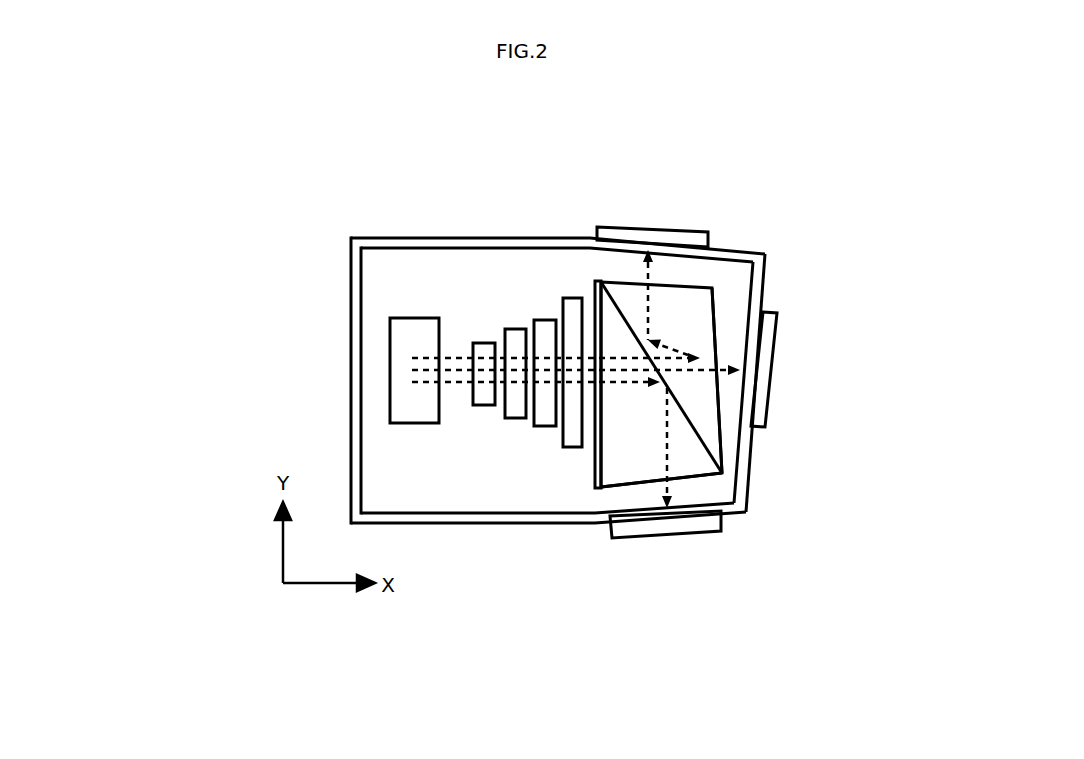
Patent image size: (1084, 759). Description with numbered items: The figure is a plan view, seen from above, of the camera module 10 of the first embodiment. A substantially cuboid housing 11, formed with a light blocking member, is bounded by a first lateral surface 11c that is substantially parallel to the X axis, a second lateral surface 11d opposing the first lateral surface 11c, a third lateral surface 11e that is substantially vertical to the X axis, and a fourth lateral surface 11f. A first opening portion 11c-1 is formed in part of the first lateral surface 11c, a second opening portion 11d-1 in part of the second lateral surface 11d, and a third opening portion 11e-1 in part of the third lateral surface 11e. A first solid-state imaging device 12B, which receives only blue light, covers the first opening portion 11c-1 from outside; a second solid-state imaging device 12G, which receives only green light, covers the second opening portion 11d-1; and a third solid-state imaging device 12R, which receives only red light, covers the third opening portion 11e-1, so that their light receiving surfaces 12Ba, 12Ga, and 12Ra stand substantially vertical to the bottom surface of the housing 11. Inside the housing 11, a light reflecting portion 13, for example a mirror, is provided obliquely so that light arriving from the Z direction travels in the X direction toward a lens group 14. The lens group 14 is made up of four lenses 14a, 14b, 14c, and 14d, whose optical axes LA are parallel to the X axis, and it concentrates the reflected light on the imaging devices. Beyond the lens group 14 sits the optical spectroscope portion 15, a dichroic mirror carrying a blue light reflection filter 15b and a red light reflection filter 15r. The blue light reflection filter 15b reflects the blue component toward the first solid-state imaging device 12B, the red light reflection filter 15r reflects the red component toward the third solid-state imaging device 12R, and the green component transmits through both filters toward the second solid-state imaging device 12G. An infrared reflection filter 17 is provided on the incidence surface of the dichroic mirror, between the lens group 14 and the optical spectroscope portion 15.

The camera module 10 is at (748, 203).
The housing 11 is at (569, 379).
The first lateral surface 11c is at (387, 521).
The first opening portion 11c-1 is at (649, 520).
The second lateral surface 11d is at (745, 448).
The second opening portion 11d-1 is at (744, 389).
The third lateral surface 11e is at (544, 240).
The third opening portion 11e-1 is at (670, 248).
The fourth lateral surface 11f is at (352, 304).
The third solid-state imaging device 12R is at (612, 232).
The light receiving surface 12Ra is at (652, 238).
The second solid-state imaging device 12G is at (768, 321).
The light receiving surface 12Ga is at (757, 350).
The first solid-state imaging device 12B is at (683, 533).
The light receiving surface 12Ba is at (696, 536).
The light reflecting portion 13 is at (407, 405).
The lens group 14 is at (496, 461).
The lens 14a is at (482, 407).
The lens 14b is at (518, 420).
The lens 14c is at (547, 430).
The lens 14d is at (563, 439).
The optical spectroscope portion 15 is at (732, 352).
The red light reflection filter 15r is at (718, 303).
The blue light reflection filter 15b is at (724, 470).
The infrared reflection filter 17 is at (599, 490).
The optical axis LA is at (466, 370).